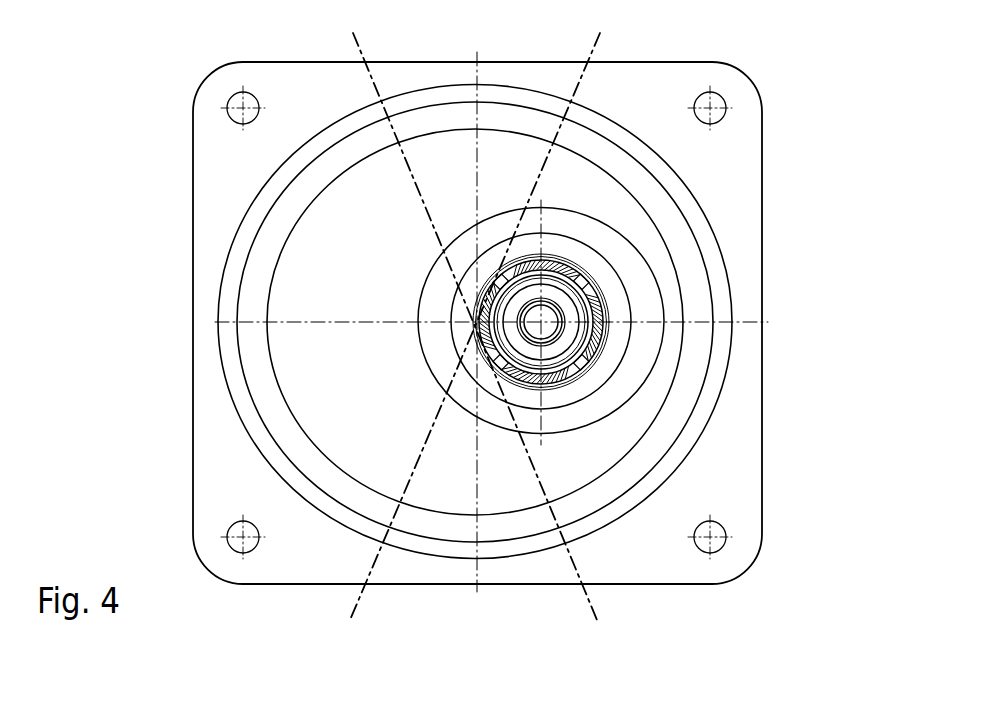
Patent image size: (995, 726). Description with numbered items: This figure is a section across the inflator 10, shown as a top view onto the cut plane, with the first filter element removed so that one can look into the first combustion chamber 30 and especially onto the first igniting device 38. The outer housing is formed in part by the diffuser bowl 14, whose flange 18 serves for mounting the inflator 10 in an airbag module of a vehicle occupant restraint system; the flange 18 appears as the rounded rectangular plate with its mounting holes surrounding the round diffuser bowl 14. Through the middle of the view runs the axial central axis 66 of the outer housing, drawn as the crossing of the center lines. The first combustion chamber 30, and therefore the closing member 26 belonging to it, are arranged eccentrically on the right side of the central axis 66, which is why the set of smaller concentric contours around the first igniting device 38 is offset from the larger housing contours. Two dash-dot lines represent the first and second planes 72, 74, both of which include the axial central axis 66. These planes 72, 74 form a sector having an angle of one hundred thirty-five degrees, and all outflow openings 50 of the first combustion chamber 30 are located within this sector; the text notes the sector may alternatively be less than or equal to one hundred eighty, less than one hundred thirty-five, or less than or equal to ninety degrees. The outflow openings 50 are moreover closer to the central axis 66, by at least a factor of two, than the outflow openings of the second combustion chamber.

The inflator 10 is at (797, 46).
The diffuser bowl 14 is at (283, 325).
The flange 18 is at (738, 159).
The closing member 26 is at (625, 318).
The first combustion chamber 30 is at (573, 304).
The first igniting device 38 is at (552, 327).
The outflow openings 50 is at (567, 279).
The axial central axis 66 is at (472, 324).
The first plane 72 is at (598, 46).
The second plane 74 is at (362, 50).